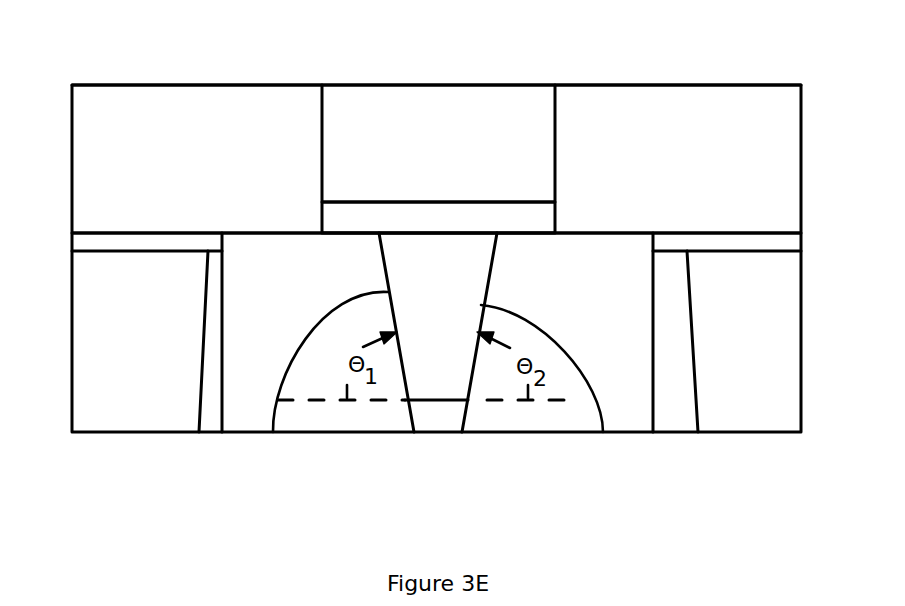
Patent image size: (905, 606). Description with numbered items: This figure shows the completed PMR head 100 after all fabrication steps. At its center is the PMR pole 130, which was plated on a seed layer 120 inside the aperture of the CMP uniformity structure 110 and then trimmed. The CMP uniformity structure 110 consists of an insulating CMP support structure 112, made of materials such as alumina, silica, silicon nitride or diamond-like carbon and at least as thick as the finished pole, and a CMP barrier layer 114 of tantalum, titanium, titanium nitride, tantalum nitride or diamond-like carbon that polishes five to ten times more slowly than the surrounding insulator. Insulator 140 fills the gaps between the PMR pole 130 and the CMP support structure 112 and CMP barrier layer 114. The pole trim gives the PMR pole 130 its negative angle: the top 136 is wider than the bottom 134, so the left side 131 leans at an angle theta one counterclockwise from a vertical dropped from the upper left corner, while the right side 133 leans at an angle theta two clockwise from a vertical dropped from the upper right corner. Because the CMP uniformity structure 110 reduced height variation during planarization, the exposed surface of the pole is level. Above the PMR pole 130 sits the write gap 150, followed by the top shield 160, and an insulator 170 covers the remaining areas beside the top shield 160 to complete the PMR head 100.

The PMR head 100 is at (416, 30).
The insulator 170 is at (133, 84).
The top shield 160 is at (455, 85).
The write gap 150 is at (320, 219).
The top of the PMR pole 136 is at (383, 240).
The CMP uniformity structure 110 is at (65, 232).
The CMP support structure 112 is at (123, 435).
The CMP barrier layer 114 is at (199, 432).
The insulator 140 is at (238, 432).
The PMR pole 130 is at (378, 482).
The left side of the PMR pole 131 is at (273, 432).
The right side of the PMR pole 133 is at (603, 432).
The seed layer 120 is at (435, 400).
The bottom of the PMR pole 134 is at (443, 400).